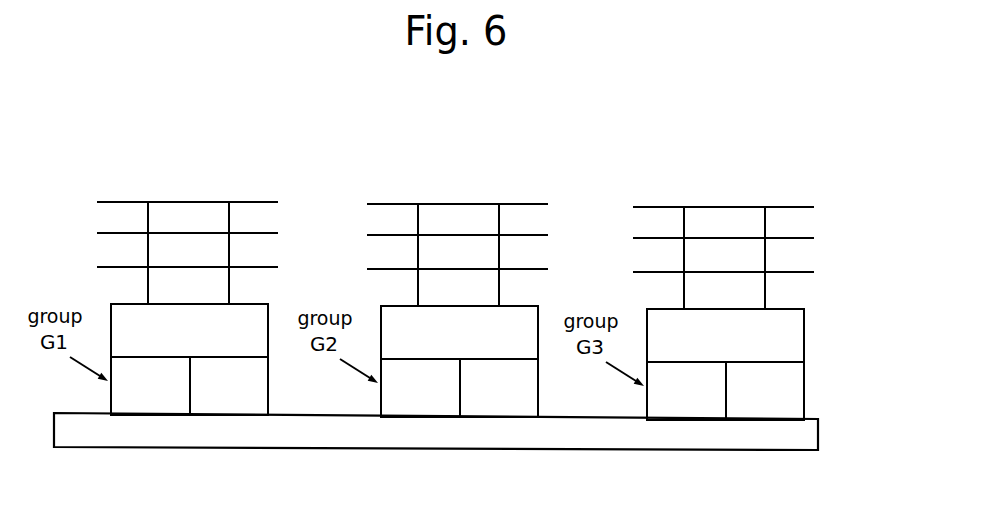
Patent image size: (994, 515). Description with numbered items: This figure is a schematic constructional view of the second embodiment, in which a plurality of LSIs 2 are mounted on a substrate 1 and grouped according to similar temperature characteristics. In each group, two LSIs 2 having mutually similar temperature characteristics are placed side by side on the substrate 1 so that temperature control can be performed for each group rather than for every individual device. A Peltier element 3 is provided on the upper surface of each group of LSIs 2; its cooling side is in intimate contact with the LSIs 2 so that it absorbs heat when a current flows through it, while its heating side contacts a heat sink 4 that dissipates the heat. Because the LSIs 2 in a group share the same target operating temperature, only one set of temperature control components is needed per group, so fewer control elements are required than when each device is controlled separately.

The substrate 1 is at (170, 449).
The LSI 2 is at (268, 389).
The Peltier element 3 is at (266, 304).
The heat sink 4 is at (190, 201).